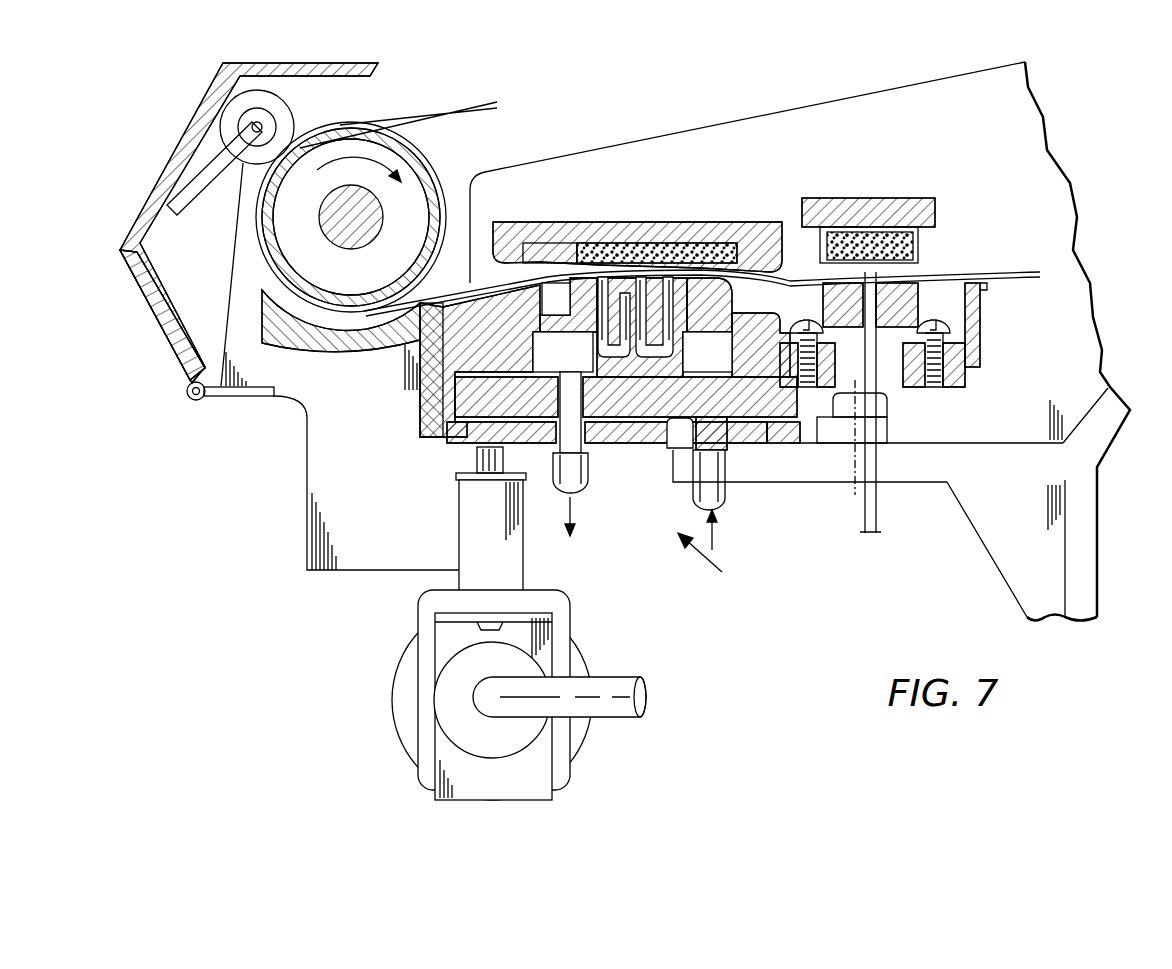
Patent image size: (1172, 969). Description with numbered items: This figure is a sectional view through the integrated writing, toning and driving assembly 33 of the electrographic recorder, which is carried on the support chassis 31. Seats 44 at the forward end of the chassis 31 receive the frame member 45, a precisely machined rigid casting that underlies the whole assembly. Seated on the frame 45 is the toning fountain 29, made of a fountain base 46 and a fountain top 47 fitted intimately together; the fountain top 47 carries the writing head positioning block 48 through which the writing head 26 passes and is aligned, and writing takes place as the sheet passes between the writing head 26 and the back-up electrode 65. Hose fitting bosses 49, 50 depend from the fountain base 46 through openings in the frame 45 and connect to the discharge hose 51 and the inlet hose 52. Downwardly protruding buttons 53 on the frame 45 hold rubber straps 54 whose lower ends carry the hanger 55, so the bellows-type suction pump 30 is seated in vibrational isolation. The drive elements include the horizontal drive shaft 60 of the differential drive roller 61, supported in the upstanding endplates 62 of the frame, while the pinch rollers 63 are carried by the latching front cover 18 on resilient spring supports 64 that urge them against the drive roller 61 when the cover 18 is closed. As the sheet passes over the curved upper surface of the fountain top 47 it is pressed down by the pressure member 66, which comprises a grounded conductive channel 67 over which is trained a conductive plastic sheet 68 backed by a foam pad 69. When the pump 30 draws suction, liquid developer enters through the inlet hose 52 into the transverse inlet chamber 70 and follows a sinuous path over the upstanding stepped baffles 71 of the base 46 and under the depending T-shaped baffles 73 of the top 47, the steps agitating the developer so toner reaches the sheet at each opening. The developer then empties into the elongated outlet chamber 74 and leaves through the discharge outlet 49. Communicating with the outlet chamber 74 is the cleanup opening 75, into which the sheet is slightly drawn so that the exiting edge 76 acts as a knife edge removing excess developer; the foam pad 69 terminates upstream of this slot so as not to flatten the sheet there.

The latching front cover 18 is at (172, 345).
The writing head 26 is at (878, 385).
The toning fountain 29 is at (645, 268).
The suction pump 30 is at (497, 674).
The support chassis 31 is at (1078, 548).
The integrated writing, toning and driving assembly 33 is at (730, 588).
The seats 44 is at (914, 478).
The frame member 45 is at (630, 445).
The fountain base 46 is at (784, 443).
The fountain top 47 is at (753, 320).
The writing head positioning block 48 is at (918, 300).
The hose fitting boss 49 is at (552, 445).
The hose fitting boss 50 is at (728, 443).
The discharge hose 51 is at (587, 476).
The inlet hose 52 is at (726, 493).
The buttons 53 is at (477, 459).
The rubber straps 54 is at (470, 527).
The hanger 55 is at (535, 618).
The drive shaft 60 is at (377, 237).
The differential drive roller 61 is at (440, 166).
The endplates 62 is at (370, 107).
The pinch rollers 63 is at (225, 103).
The resilient spring supports 64 is at (200, 172).
The back-up electrode 65 is at (850, 238).
The pressure member 66 is at (637, 218).
The conductive channel 67 is at (508, 228).
The conductive plastic sheet 68 is at (545, 243).
The foam pad 69 is at (628, 245).
The inlet chamber 70 is at (728, 313).
The upstanding stepped baffles 71 is at (604, 322).
The T-shaped baffles 73 is at (612, 357).
The outlet chamber 74 is at (527, 348).
The cleanup opening 75 is at (558, 318).
The exiting edge 76 is at (540, 297).